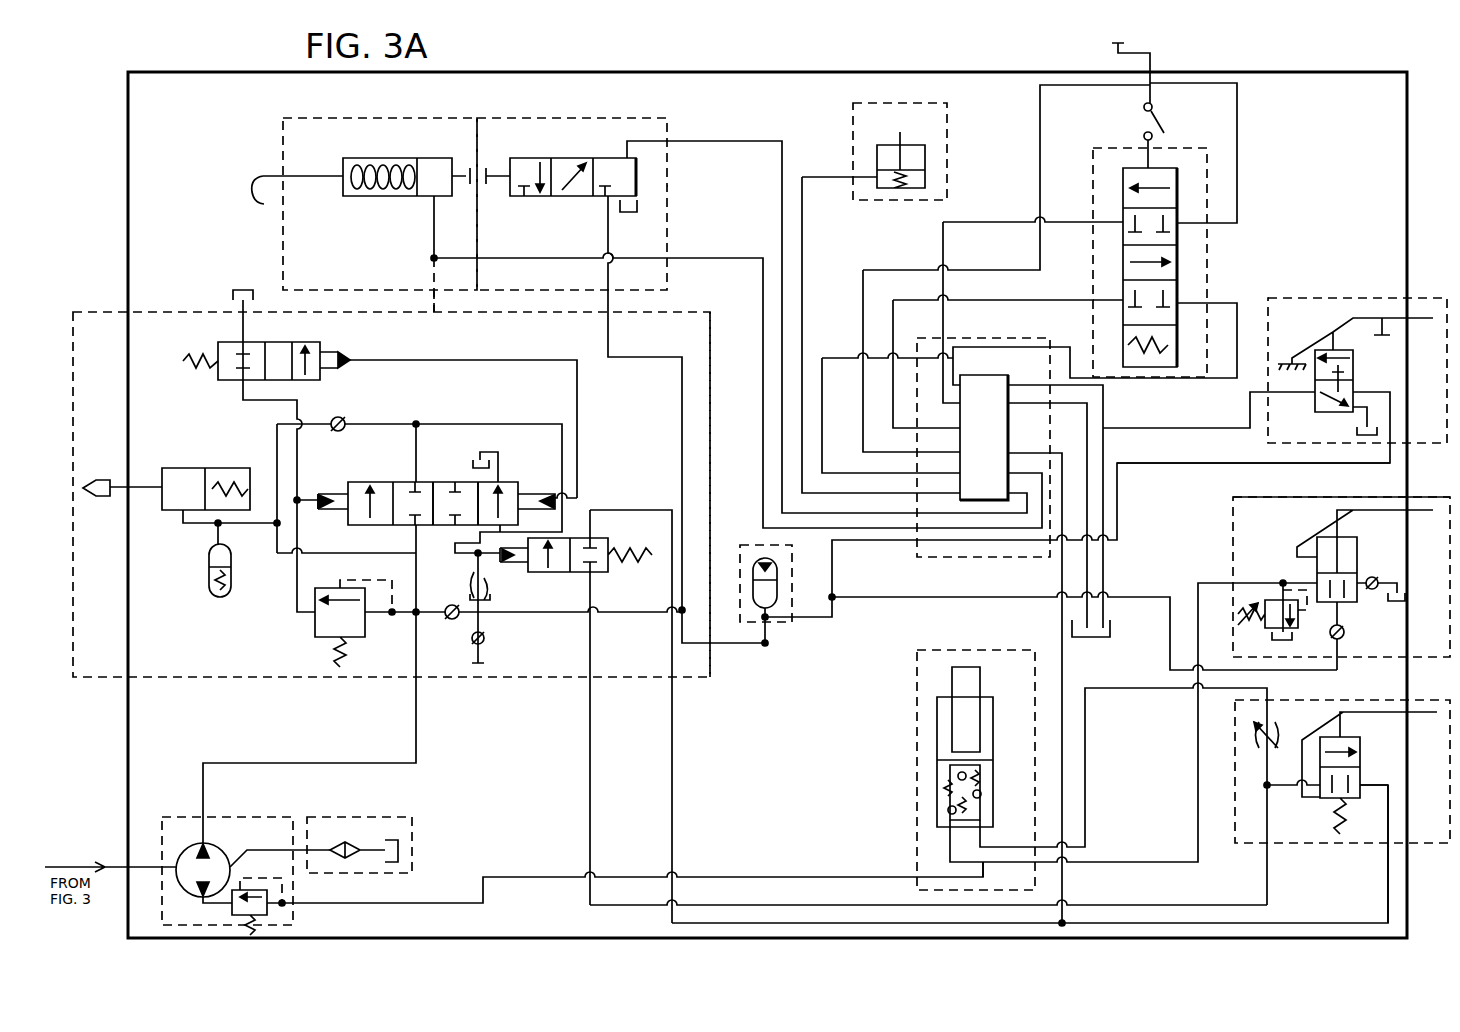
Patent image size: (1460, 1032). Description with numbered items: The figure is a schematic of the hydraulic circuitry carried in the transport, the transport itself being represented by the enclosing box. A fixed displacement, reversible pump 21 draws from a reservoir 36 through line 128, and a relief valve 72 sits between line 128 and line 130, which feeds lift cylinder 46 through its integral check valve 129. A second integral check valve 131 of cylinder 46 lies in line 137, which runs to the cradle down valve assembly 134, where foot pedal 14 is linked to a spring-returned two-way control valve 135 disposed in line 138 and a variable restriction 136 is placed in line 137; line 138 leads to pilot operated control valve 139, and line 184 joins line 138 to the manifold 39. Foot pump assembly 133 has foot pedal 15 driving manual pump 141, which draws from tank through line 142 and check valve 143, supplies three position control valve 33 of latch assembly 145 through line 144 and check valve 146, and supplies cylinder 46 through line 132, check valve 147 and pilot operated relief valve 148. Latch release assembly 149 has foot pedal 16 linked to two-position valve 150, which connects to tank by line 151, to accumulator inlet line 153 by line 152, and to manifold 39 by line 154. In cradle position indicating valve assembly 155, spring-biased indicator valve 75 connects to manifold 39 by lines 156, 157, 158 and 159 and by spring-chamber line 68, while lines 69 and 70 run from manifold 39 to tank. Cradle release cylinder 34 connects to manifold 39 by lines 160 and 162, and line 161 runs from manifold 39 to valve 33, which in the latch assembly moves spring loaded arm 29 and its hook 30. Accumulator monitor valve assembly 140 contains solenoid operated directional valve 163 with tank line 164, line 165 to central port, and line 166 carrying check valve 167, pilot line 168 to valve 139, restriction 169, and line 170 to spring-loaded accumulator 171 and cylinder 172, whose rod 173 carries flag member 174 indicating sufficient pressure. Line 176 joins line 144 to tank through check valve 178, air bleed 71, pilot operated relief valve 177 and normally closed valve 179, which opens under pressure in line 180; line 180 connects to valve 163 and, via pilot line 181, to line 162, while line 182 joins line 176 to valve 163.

The foot pedal 14 is at (1437, 712).
The foot pedal 15 is at (1433, 510).
The foot pedal 16 is at (1445, 300).
The pump 21 is at (163, 823).
The spring loaded arm 29 is at (312, 176).
The hook 30 is at (240, 203).
The three position control valve 33 is at (567, 157).
The cradle release cylinder 34 is at (922, 105).
The reservoir 36 is at (412, 833).
The manifold 39 is at (994, 446).
The lift cylinder 46 is at (917, 688).
The hydraulic line 68 is at (988, 342).
The hydraulic line 69 is at (1118, 456).
The hydraulic line 70 is at (1082, 462).
The air bleed 71 is at (484, 636).
The relief valve 72 is at (240, 890).
The cradle position indicator valve 75 is at (1178, 180).
The hydraulic line 128 is at (250, 850).
The check valve 129 is at (982, 793).
The hydraulic line 130 is at (812, 875).
The check valve 131 is at (950, 775).
The hydraulic line 132 is at (1198, 833).
The foot pump assembly 133 is at (1385, 492).
The cradle down valve assembly 134 is at (1363, 845).
The control valve 135 is at (1360, 758).
The variable restriction 136 is at (1258, 753).
The hydraulic line 137 is at (1128, 690).
The hydraulic line 138 is at (1281, 792).
The control valve 139 is at (578, 580).
The accumulator monitor valve assembly 140 is at (193, 683).
The manually actuatable pump 141 is at (1317, 565).
The hydraulic line 142 is at (1388, 600).
The check valve 143 is at (1373, 577).
The hydraulic line 144 is at (1158, 597).
The latch assembly 145 is at (667, 186).
The check valve 146 is at (1345, 634).
The check valve 147 is at (948, 810).
The pressure relief valve 148 is at (1268, 628).
The latch release assembly 149 is at (1357, 298).
The control valve 150 is at (1350, 372).
The hydraulic line 151 is at (1360, 417).
The hydraulic line 152 is at (1180, 466).
The inlet line 153 is at (785, 630).
The hydraulic line 154 is at (1213, 428).
The cradle position indicating valve assembly 155 is at (1210, 255).
The hydraulic line 156 is at (1240, 118).
The hydraulic line 157 is at (988, 225).
The hydraulic line 158 is at (1252, 300).
The hydraulic line 159 is at (1037, 303).
The hydraulic line 160 is at (805, 237).
The hydraulic line 161 is at (733, 138).
The hydraulic line 162 is at (705, 260).
The directional control valve 163 is at (443, 478).
The hydraulic line 164 is at (505, 460).
The hydraulic line 165 is at (416, 444).
The hydraulic line 166 is at (512, 422).
The check valve 167 is at (347, 418).
The pilot line 168 is at (568, 575).
The flow restriction 169 is at (470, 575).
The hydraulic line 170 is at (268, 555).
The spring-loaded accumulator 171 is at (232, 565).
The single-acting spring-returned cylinder 172 is at (226, 468).
The rod 173 is at (146, 470).
The flag member 174 is at (94, 500).
The hydraulic line 176 is at (652, 612).
The pressure relief valve 177 is at (313, 633).
The check valve 178 is at (450, 620).
The control valve 179 is at (312, 340).
The hydraulic line 180 is at (538, 346).
The pilot line 181 is at (445, 323).
The hydraulic line 182 is at (313, 493).
The hydraulic line 184 is at (1063, 662).